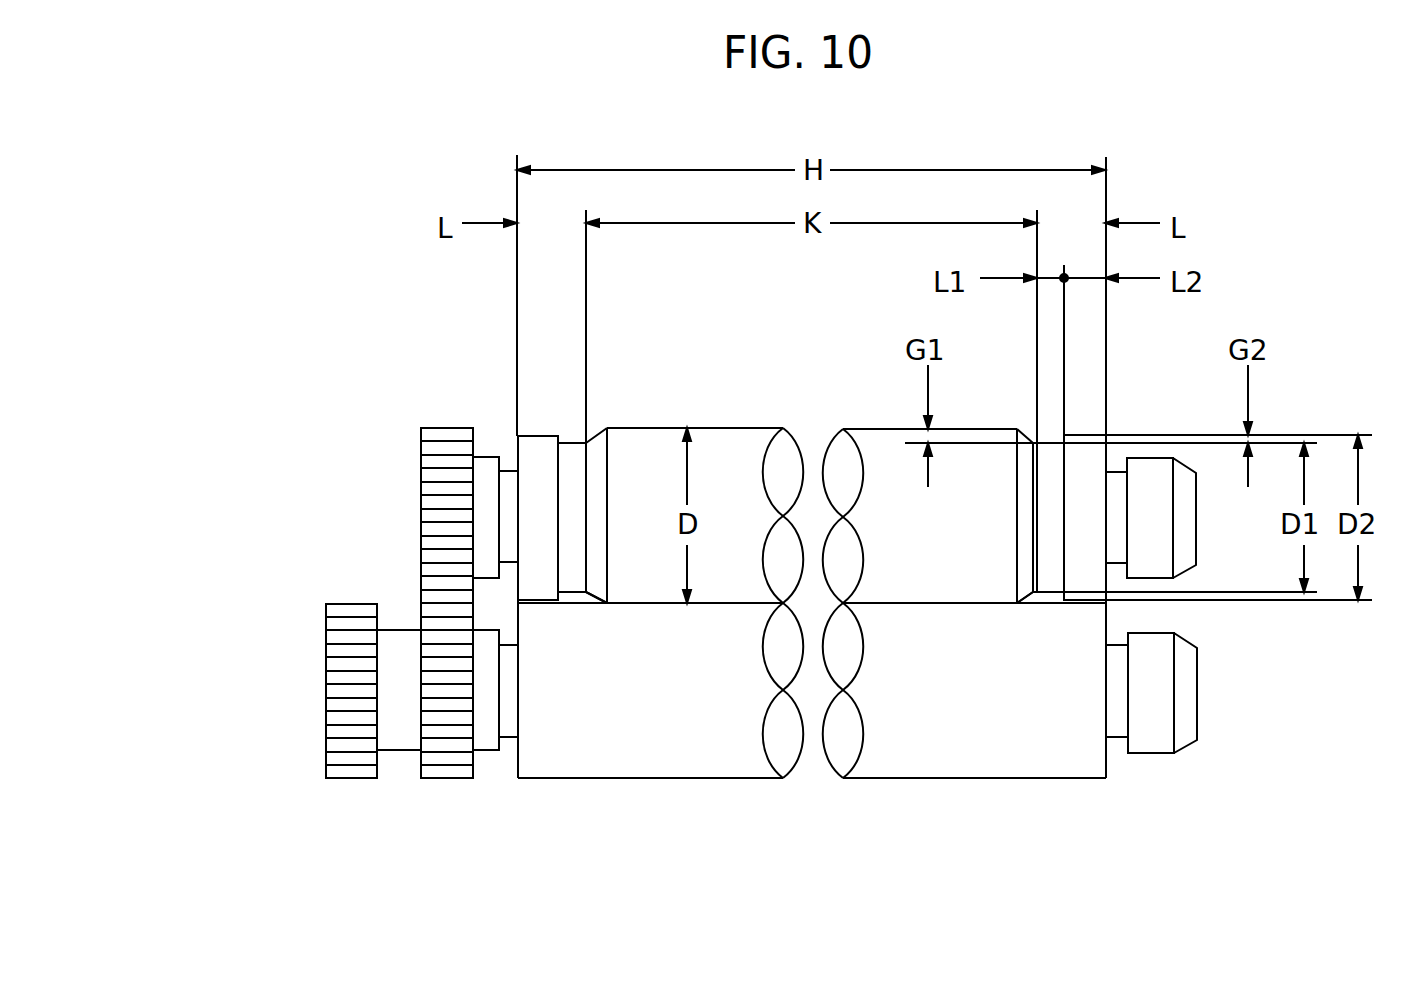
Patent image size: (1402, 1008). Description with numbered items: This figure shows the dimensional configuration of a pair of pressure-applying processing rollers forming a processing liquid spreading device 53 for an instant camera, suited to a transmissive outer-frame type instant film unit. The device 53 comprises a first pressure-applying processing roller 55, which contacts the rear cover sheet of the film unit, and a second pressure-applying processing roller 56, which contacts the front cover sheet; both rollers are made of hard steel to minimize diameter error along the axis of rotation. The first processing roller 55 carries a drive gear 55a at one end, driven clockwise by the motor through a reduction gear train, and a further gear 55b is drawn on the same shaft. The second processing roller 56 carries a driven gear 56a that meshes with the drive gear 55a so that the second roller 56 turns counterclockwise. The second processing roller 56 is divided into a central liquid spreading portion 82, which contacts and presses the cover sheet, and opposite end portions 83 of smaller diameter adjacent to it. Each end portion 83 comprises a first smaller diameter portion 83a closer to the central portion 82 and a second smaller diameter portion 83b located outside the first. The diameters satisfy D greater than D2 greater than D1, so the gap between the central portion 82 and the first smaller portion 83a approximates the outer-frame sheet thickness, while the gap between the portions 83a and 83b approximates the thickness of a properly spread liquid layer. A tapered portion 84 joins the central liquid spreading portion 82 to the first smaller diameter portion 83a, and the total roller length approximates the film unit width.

The processing liquid spreading device 53 is at (182, 503).
The first pressure-applying processing roller 55 is at (320, 688).
The drive gear 55a is at (457, 780).
The gear of lower roller 55b is at (347, 787).
The second pressure-applying processing roller 56 is at (420, 528).
The driven gear 56a is at (443, 452).
The central liquid spreading portion 82 is at (743, 445).
The opposite end portions 83 is at (685, 858).
The first smaller diameter portion 83a is at (538, 580).
The second smaller diameter portion 83b is at (572, 580).
The tapered portion 84 is at (598, 587).